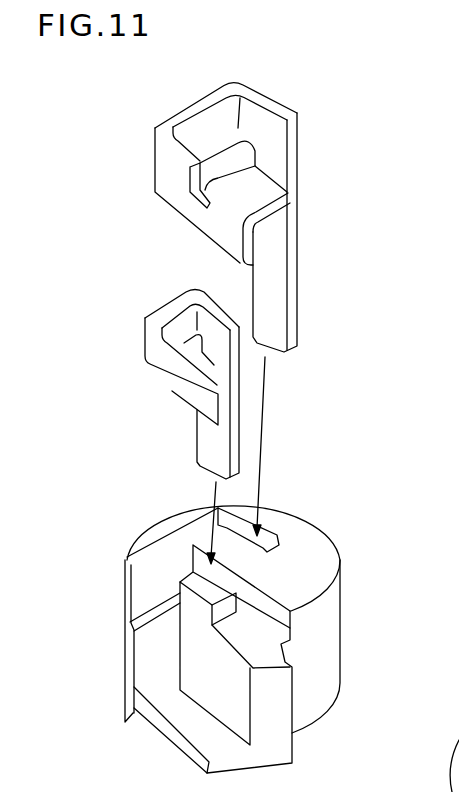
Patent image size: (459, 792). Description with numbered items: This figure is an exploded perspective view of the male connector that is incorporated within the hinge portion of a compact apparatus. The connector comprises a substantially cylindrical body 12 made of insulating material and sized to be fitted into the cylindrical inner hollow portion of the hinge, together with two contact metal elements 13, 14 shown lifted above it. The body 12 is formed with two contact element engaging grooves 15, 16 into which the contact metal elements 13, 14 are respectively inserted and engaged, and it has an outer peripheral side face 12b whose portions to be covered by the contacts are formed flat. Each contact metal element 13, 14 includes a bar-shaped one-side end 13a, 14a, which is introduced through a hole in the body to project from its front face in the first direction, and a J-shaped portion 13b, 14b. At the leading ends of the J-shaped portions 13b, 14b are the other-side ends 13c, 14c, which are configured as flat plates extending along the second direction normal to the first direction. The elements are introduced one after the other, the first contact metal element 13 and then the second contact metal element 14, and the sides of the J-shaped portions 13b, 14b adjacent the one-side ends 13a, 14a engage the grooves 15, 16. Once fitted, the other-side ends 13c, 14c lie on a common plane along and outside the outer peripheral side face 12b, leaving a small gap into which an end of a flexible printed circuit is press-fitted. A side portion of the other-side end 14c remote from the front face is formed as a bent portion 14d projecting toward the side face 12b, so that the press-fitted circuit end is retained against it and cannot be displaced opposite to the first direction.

The body 12 is at (249, 630).
The outer peripheral side face 12b is at (225, 698).
The contact metal element 13 is at (138, 364).
The one-side end 13a is at (208, 450).
The J-shaped portion 13b is at (173, 305).
The other-side end 13c is at (178, 378).
The contact metal element 14 is at (226, 205).
The one-side end 14a is at (298, 330).
The J-shaped portion 14b is at (196, 105).
The other-side end 14c is at (197, 213).
The bent portion 14d is at (257, 191).
The contact element engaging groove 15 is at (241, 608).
The contact element engaging groove 16 is at (264, 539).